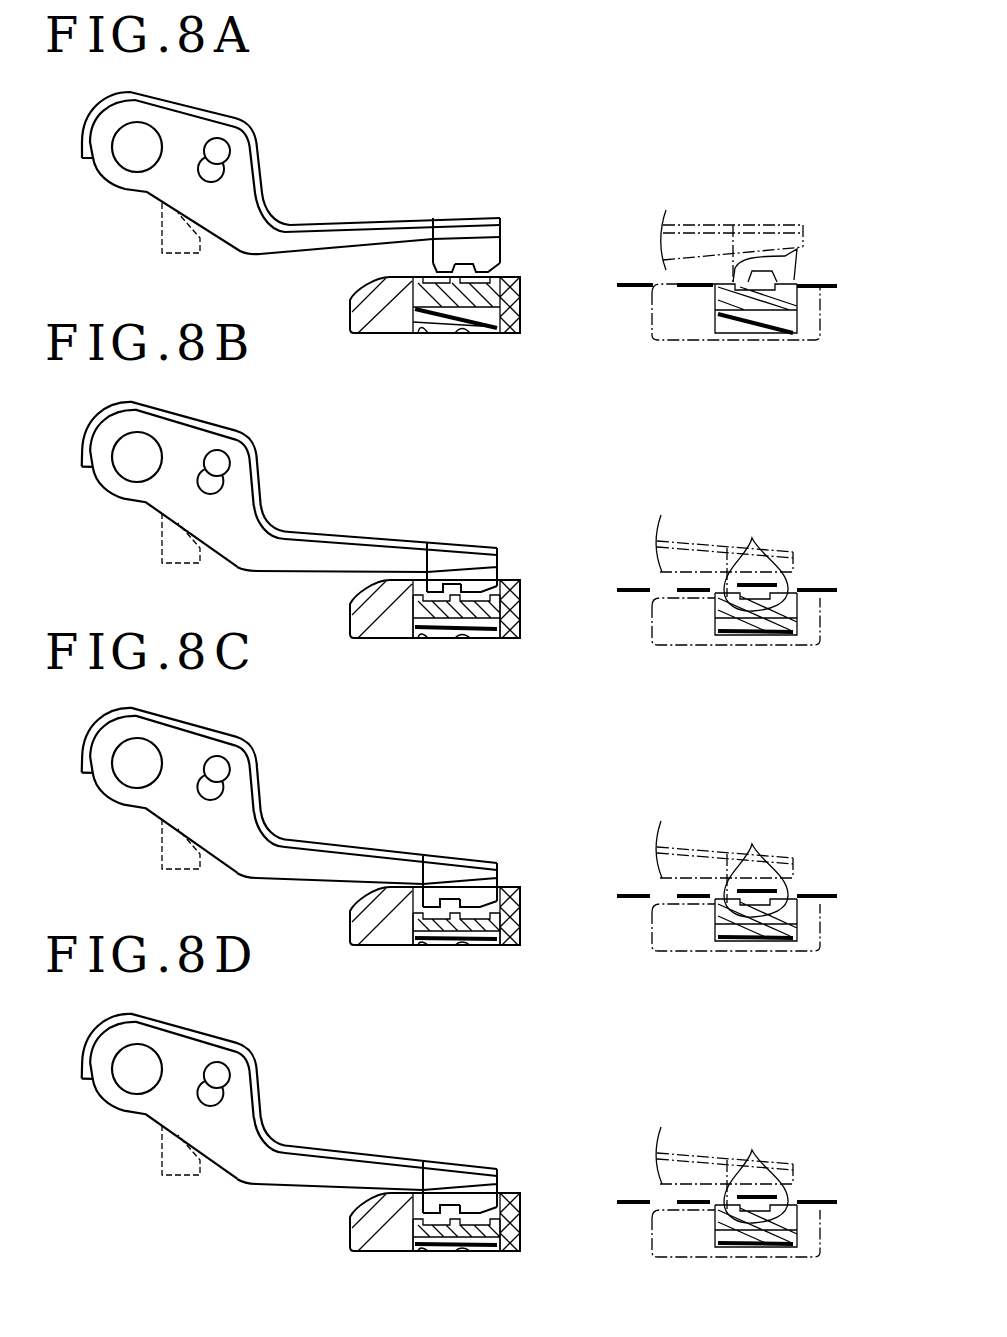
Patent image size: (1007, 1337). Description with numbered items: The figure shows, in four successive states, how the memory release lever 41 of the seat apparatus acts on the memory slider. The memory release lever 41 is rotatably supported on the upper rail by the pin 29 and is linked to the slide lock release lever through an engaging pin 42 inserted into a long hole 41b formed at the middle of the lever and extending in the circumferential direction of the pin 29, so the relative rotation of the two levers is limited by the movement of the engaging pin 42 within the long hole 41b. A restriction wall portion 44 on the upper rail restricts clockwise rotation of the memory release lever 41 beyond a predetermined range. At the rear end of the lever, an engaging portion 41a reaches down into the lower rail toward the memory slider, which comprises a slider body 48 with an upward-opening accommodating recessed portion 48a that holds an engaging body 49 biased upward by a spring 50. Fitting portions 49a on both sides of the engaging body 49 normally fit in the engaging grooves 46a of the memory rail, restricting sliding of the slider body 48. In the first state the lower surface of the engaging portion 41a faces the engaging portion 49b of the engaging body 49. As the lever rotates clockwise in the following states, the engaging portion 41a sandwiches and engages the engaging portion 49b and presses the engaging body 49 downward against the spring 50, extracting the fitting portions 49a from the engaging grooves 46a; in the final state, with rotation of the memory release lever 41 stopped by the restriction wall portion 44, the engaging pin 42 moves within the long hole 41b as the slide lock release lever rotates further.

In FIG. 8A, the pin 29 is at (113, 162).
In FIG. 8B, the pin 29 is at (106, 468).
In FIG. 8C, the pin 29 is at (106, 774).
In FIG. 8D, the pin 29 is at (106, 1080).
In FIG. 8A, the memory release lever 41 is at (213, 127).
In FIG. 8B, the memory release lever 41 is at (288, 478).
In FIG. 8C, the memory release lever 41 is at (288, 787).
In FIG. 8D, the memory release lever 41 is at (288, 1093).
In FIG. 8A, the engaging portion 41a is at (497, 268).
In FIG. 8B, the engaging portion 41a is at (496, 567).
In FIG. 8C, the engaging portion 41a is at (494, 881).
In FIG. 8D, the engaging portion 41a is at (494, 1187).
In FIG. 8A, the long hole 41b is at (225, 173).
In FIG. 8B, the long hole 41b is at (258, 482).
In FIG. 8C, the long hole 41b is at (258, 788).
In FIG. 8D, the long hole 41b is at (258, 1094).
In FIG. 8A, the engaging pin 42 is at (228, 147).
In FIG. 8B, the engaging pin 42 is at (249, 452).
In FIG. 8C, the engaging pin 42 is at (249, 758).
In FIG. 8D, the engaging pin 42 is at (249, 1064).
In FIG. 8A, the restriction wall portion 44 is at (162, 232).
In FIG. 8B, the restriction wall portion 44 is at (137, 538).
In FIG. 8C, the restriction wall portion 44 is at (137, 844).
In FIG. 8D, the restriction wall portion 44 is at (137, 1150).
In FIG. 8A, the engaging grooves 46a is at (715, 292).
In FIG. 8B, the engaging grooves 46a is at (746, 612).
In FIG. 8C, the engaging grooves 46a is at (746, 918).
In FIG. 8D, the engaging grooves 46a is at (746, 1224).
In FIG. 8A, the slider body 48 is at (388, 334).
In FIG. 8B, the slider body 48 is at (585, 652).
In FIG. 8C, the slider body 48 is at (585, 958).
In FIG. 8D, the slider body 48 is at (585, 1264).
In FIG. 8A, the accommodating recessed portion 48a is at (426, 334).
In FIG. 8B, the accommodating recessed portion 48a is at (449, 641).
In FIG. 8C, the accommodating recessed portion 48a is at (449, 953).
In FIG. 8D, the accommodating recessed portion 48a is at (449, 1259).
In FIG. 8A, the engaging body 49 is at (498, 295).
In FIG. 8B, the engaging body 49 is at (681, 612).
In FIG. 8C, the engaging body 49 is at (681, 919).
In FIG. 8D, the engaging body 49 is at (681, 1225).
In FIG. 8A, the fitting portions 49a is at (793, 254).
In FIG. 8B, the fitting portions 49a is at (756, 558).
In FIG. 8C, the fitting portions 49a is at (756, 864).
In FIG. 8D, the fitting portions 49a is at (756, 1170).
In FIG. 8A, the engaging portion 49b is at (437, 262).
In FIG. 8B, the engaging portion 49b is at (451, 550).
In FIG. 8C, the engaging portion 49b is at (449, 860).
In FIG. 8D, the engaging portion 49b is at (449, 1166).
In FIG. 8A, the spring 50 is at (467, 334).
In FIG. 8B, the spring 50 is at (604, 660).
In FIG. 8C, the spring 50 is at (604, 968).
In FIG. 8D, the spring 50 is at (604, 1274).